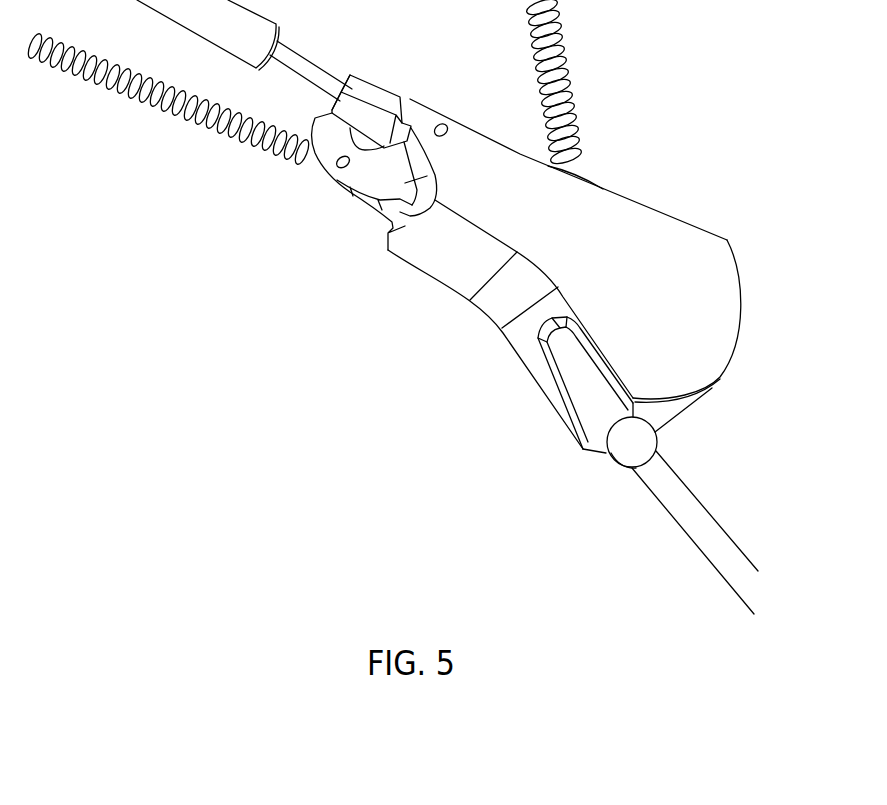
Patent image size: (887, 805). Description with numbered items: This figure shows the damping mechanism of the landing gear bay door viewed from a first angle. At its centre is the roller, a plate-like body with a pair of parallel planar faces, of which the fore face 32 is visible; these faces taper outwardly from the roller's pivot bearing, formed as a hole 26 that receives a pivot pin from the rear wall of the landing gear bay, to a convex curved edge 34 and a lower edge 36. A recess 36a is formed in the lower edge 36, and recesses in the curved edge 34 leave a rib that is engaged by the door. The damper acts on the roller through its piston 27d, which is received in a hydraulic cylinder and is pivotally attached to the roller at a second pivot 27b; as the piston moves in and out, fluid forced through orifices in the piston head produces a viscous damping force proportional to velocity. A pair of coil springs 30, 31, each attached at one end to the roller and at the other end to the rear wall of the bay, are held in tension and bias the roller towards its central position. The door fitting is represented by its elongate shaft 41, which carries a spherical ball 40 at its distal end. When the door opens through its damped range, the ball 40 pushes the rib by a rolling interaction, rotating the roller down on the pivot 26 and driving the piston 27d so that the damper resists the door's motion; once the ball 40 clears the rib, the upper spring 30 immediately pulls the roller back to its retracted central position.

The piston 27d is at (313, 66).
The second pivot 27b is at (383, 82).
The hole 26 is at (452, 118).
The coil spring 30 is at (562, 45).
The coil spring 31 is at (230, 138).
The fore face 32 is at (630, 212).
The lower edge 36 is at (522, 340).
The recess 36a is at (597, 400).
The convex curved edge 34 is at (680, 418).
The spherical ball 40 is at (630, 458).
The elongate shaft 41 is at (688, 510).